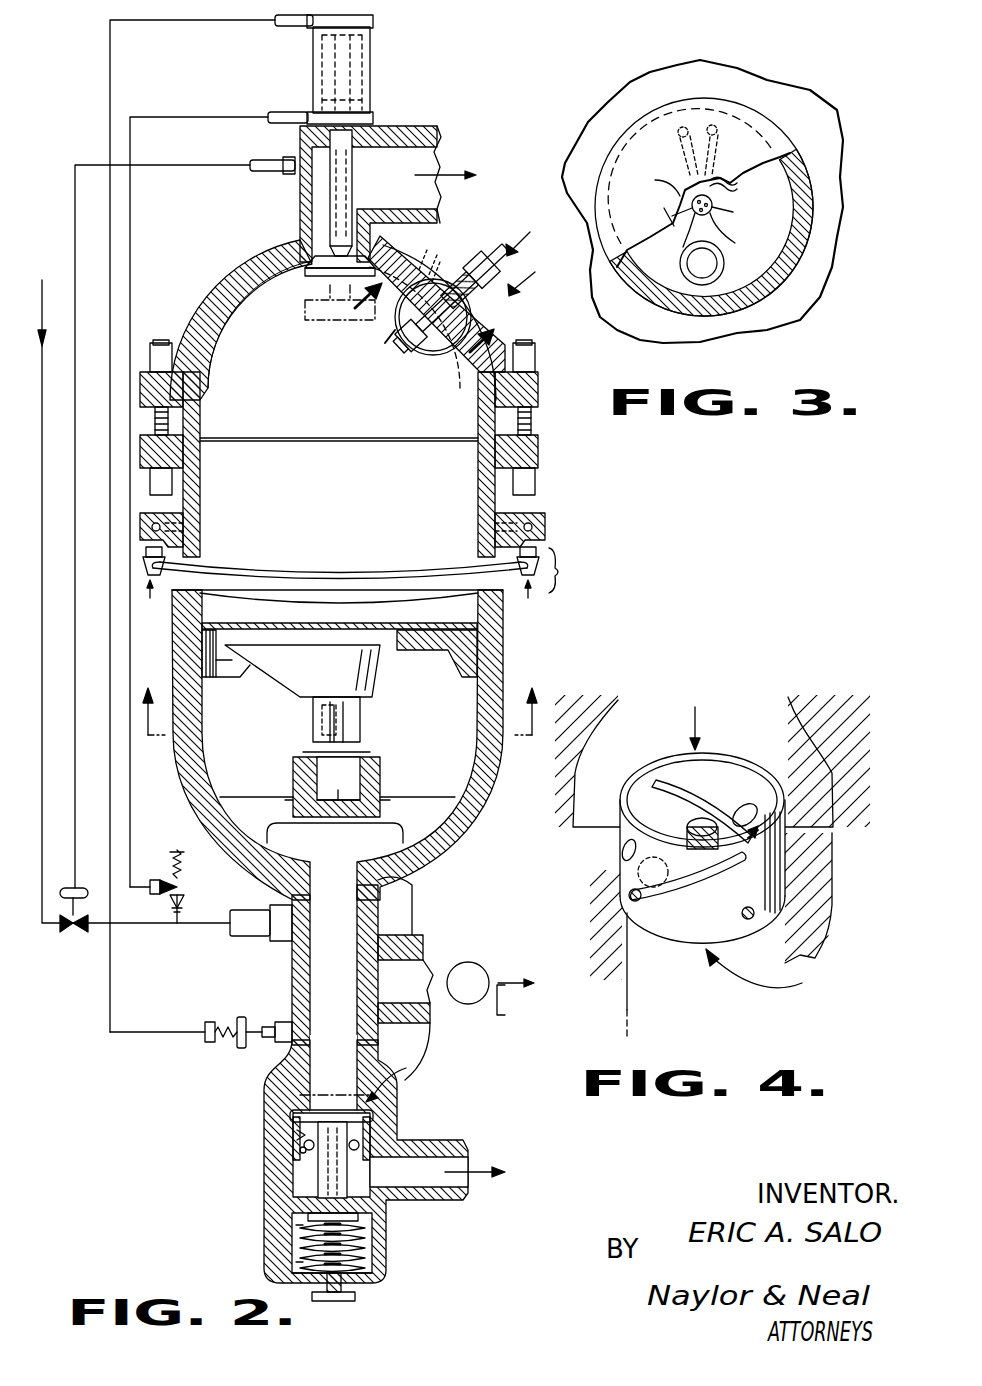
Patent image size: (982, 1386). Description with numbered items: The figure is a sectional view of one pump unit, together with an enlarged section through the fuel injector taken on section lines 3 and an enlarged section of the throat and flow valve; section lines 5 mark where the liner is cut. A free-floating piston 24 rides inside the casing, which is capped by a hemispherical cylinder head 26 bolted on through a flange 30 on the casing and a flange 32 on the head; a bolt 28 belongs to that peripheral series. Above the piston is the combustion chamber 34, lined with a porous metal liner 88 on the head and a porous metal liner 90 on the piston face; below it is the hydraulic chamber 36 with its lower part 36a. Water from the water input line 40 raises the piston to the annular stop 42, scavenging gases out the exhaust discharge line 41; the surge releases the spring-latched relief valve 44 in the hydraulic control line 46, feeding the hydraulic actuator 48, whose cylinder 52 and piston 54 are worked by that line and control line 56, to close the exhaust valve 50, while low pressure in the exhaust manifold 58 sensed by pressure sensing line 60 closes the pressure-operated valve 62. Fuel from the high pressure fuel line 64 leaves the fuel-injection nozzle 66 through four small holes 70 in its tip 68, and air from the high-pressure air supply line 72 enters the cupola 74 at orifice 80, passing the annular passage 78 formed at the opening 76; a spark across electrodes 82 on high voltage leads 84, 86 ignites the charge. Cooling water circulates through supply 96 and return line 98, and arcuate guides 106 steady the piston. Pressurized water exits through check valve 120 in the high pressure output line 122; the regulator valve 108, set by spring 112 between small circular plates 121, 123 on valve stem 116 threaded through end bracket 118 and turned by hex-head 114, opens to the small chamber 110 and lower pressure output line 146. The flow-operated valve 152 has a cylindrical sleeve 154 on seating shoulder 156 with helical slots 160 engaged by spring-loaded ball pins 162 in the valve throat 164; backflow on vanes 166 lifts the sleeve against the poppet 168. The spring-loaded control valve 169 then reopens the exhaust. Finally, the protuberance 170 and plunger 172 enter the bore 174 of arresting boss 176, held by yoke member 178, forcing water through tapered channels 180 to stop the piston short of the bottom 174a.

In FIG. 2, the section lines 3— 3 is at (426, 316).
In FIG. 2, the section lines 5— 5 is at (339, 700).
In FIG. 2, the free-floating piston 24 is at (258, 647).
In FIG. 2, the cylinder head 26 is at (246, 266).
In FIG. 2, the clamp bolt 28 is at (537, 352).
In FIG. 2, the flange 30 is at (540, 463).
In FIG. 2, the flange 32 is at (539, 393).
In FIG. 2, the combustion chamber 34 is at (358, 528).
In FIG. 2, the hydraulic chamber 36 is at (447, 741).
In FIG. 2, the lower part of the hydraulic chamber 36a is at (354, 890).
In FIG. 2, the water input line 40 is at (135, 923).
In FIG. 2, the exhaust discharge line 41 is at (455, 166).
In FIG. 2, the annular stop 42 is at (478, 446).
In FIG. 2, the spring-latched relief valve 44 is at (183, 887).
In FIG. 2, the hydraulic control line 46 is at (190, 117).
In FIG. 2, the hydraulic actuator 48 is at (372, 93).
In FIG. 2, the exhaust valve 50 is at (310, 278).
In FIG. 2, the cylinder 52 is at (360, 64).
In FIG. 2, the piston 54 is at (313, 64).
In FIG. 2, the control line 56 is at (200, 22).
In FIG. 2, the exhaust manifold 58 is at (420, 153).
In FIG. 2, the pressure sensing line 60 is at (163, 168).
In FIG. 2, the pressure-operated valve 62 is at (82, 890).
In FIG. 2, the high pressure fuel line 64 is at (471, 269).
In FIG. 2, the fuel-injection nozzle 66 is at (416, 352).
In FIG. 3, the fuel-injection nozzle 66 is at (733, 212).
In FIG. 2, the tip 68 is at (400, 352).
In FIG. 3, the tip 68 is at (683, 247).
In FIG. 3, the small holes 70 is at (735, 243).
In FIG. 2, the high-pressure air supply line 72 is at (508, 307).
In FIG. 2, the cupola 74 is at (441, 358).
In FIG. 3, the cupola 74 is at (765, 118).
In FIG. 3, the opening 76 is at (660, 182).
In FIG. 3, the annular passage 78 is at (672, 216).
In FIG. 3, the orifice 80 is at (712, 268).
In FIG. 2, the electrodes 82 is at (395, 340).
In FIG. 3, the electrodes 82 is at (737, 186).
In FIG. 2, the high voltage lead 84 is at (428, 252).
In FIG. 3, the high voltage lead 84 is at (718, 140).
In FIG. 2, the high voltage lead 86 is at (440, 262).
In FIG. 3, the high voltage lead 86 is at (679, 140).
In FIG. 2, the porous metal liner 88 is at (228, 342).
In FIG. 2, the porous metal liner 90 is at (406, 622).
In FIG. 2, the supply 96 is at (200, 566).
In FIG. 2, the return line 98 is at (540, 575).
In FIG. 2, the protruding arcuate guides 106 is at (220, 673).
In FIG. 2, the regulator valve 108 is at (366, 1159).
In FIG. 2, the small chamber 110 is at (310, 1180).
In FIG. 2, the spring 112 is at (375, 1249).
In FIG. 2, the hex-head 114 is at (346, 1301).
In FIG. 2, the valve stem 116 is at (372, 1225).
In FIG. 2, the end bracket 118 is at (386, 1278).
In FIG. 2, the check valve 120 is at (468, 962).
In FIG. 2, the small circular plate 121 is at (300, 1223).
In FIG. 2, the high pressure output line 122 is at (410, 947).
In FIG. 2, the small circular plate 123 is at (300, 1258).
In FIG. 2, the lower pressure output line 146 is at (455, 1146).
In FIG. 2, the flow-operated valve 152 is at (372, 1132).
In FIG. 4, the flow-operated valve 152 is at (702, 819).
In FIG. 4, the cylindrical sleeve 154 is at (690, 940).
In FIG. 2, the seating shoulder 156 is at (300, 1158).
In FIG. 4, the seating shoulder 156 is at (629, 917).
In FIG. 4, the helically arranged slots 160 is at (714, 872).
In FIG. 4, the spring-loaded ball pins 162 is at (748, 920).
In FIG. 2, the valve throat 164 is at (297, 1126).
In FIG. 4, the valve throat 164 is at (622, 884).
In FIG. 4, the vanes 166 is at (745, 805).
In FIG. 2, the poppet 168 is at (300, 1105).
In FIG. 2, the spring-loaded control valve 169 is at (224, 1048).
In FIG. 2, the protuberance 170 is at (374, 673).
In FIG. 2, the plunger 172 is at (361, 716).
In FIG. 2, the bore 174 is at (306, 762).
In FIG. 2, the bottom of the bore 174a is at (340, 822).
In FIG. 2, the arresting boss 176 is at (381, 779).
In FIG. 2, the yoke member 178 is at (268, 797).
In FIG. 2, the tapered channels 180 is at (318, 723).